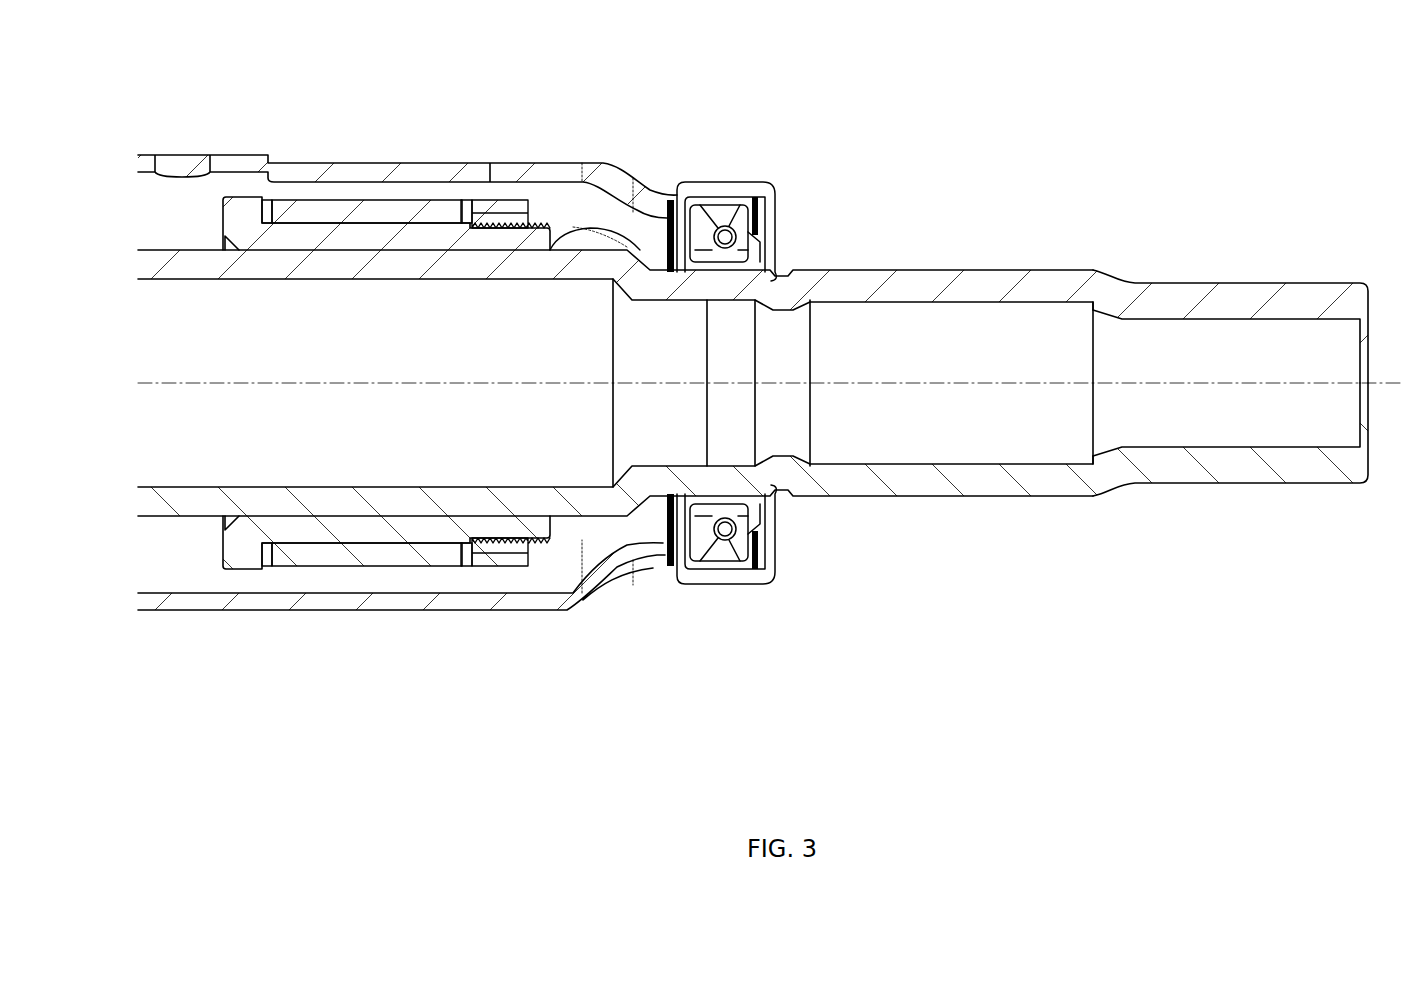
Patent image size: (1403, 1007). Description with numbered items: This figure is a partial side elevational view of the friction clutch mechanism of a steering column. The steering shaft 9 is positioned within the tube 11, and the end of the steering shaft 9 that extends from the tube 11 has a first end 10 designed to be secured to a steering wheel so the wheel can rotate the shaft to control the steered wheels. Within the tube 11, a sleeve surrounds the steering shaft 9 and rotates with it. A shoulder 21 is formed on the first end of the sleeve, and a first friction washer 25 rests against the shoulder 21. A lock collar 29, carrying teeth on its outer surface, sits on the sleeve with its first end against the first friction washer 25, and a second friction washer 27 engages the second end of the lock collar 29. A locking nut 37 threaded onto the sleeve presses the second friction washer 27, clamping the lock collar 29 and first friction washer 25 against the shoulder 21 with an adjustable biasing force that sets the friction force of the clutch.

The steering shaft 9 is at (907, 288).
The first end 10 is at (1268, 470).
The tube 11 is at (343, 165).
The shoulder 21 is at (243, 552).
The first friction washer 25 is at (263, 556).
The second friction washer 27 is at (467, 567).
The lock collar 29 is at (378, 550).
The locking nut 37 is at (512, 560).